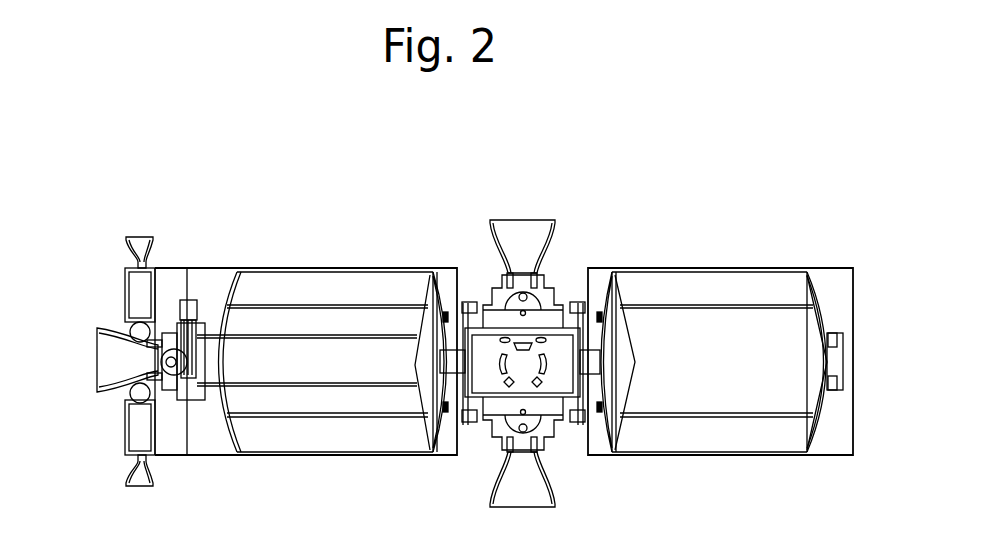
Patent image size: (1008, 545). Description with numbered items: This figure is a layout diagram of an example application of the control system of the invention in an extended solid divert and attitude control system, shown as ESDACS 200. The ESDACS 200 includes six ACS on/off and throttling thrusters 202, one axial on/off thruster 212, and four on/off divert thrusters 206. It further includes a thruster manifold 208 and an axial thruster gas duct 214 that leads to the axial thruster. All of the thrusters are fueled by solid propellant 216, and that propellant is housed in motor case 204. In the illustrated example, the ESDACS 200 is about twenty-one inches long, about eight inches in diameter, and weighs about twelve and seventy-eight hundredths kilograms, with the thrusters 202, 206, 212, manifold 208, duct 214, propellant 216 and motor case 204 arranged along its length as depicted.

The ESDACS 200 is at (344, 178).
The ACS on/off and throttling thrusters 202 is at (127, 228).
The motor case 204 is at (280, 265).
The on/off divert thrusters 206 is at (495, 210).
The thruster manifold 208 is at (560, 318).
The axial on/off thruster 212 is at (104, 323).
The axial thruster gas duct 214 is at (292, 388).
The solid propellant 216 is at (367, 428).